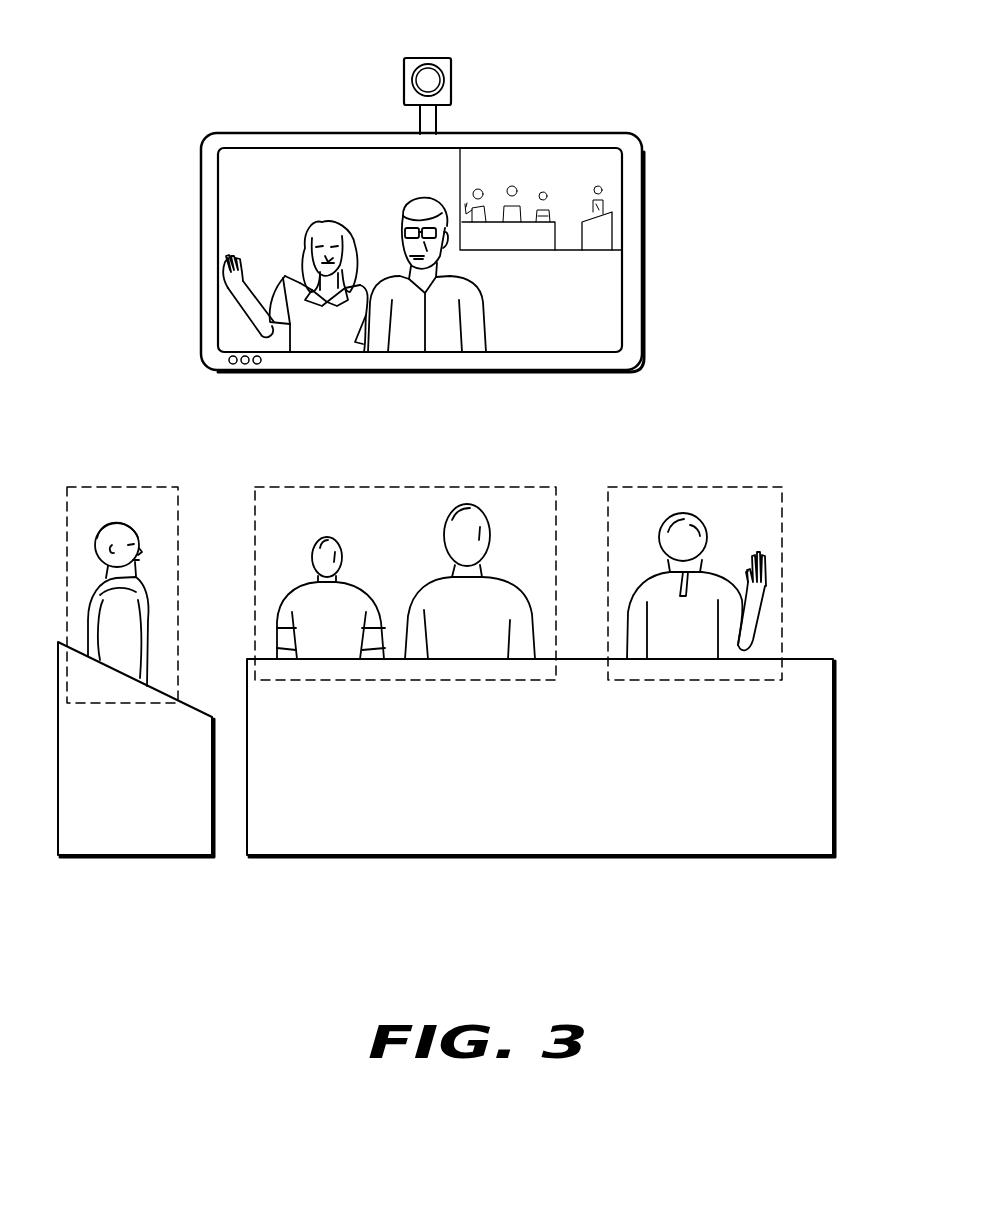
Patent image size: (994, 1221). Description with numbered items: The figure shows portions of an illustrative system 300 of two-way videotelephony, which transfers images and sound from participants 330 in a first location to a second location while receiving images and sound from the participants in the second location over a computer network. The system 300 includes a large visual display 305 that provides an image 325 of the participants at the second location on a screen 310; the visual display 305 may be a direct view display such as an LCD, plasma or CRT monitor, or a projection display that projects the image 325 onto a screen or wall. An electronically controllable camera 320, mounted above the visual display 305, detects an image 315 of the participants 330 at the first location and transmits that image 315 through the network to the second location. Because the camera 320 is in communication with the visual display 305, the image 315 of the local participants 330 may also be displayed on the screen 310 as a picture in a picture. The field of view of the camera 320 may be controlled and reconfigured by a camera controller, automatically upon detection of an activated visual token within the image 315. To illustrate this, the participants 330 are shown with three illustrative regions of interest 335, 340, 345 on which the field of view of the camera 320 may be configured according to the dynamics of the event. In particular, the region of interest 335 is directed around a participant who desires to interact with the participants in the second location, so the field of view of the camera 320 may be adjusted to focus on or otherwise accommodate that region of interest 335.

The system of two-way videotelephony 300 is at (457, 960).
The visual display 305 is at (254, 136).
The screen 310 is at (256, 203).
The image of participants at the first location 315 is at (600, 168).
The electronically controllable camera 320 is at (426, 56).
The image of participants at the second location 325 is at (295, 286).
The participants 330 is at (848, 484).
The region of interest 335 is at (705, 487).
The region of interest 340 is at (390, 487).
The region of interest 345 is at (121, 487).